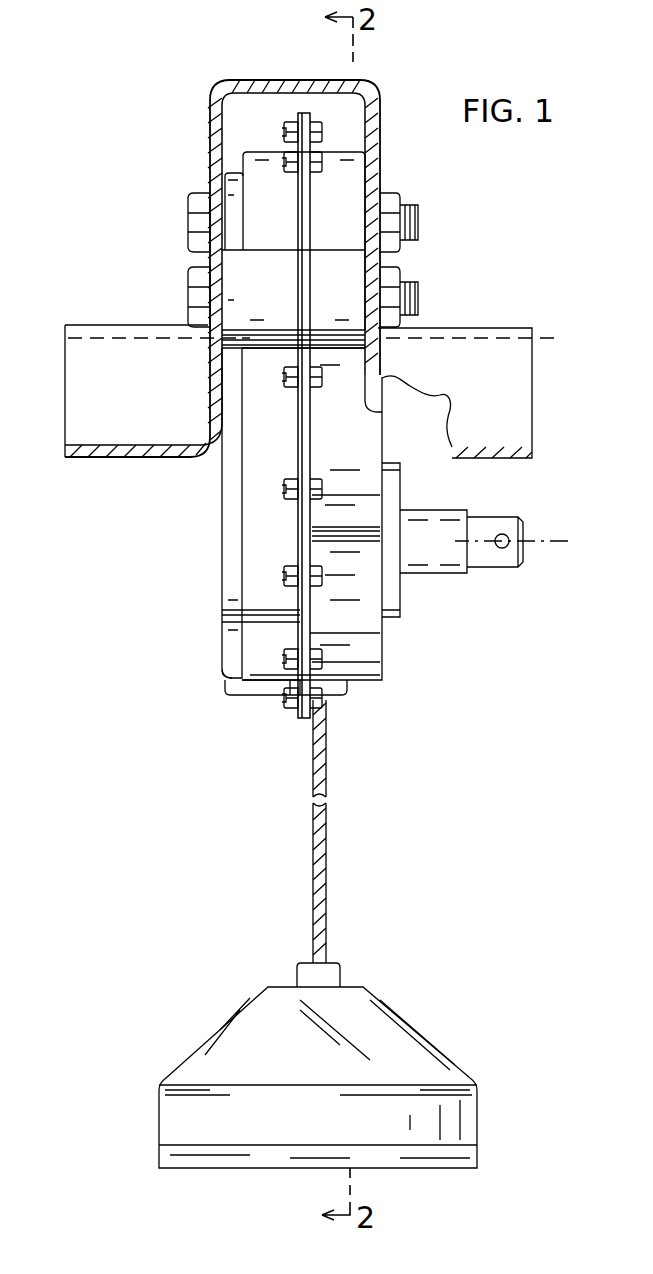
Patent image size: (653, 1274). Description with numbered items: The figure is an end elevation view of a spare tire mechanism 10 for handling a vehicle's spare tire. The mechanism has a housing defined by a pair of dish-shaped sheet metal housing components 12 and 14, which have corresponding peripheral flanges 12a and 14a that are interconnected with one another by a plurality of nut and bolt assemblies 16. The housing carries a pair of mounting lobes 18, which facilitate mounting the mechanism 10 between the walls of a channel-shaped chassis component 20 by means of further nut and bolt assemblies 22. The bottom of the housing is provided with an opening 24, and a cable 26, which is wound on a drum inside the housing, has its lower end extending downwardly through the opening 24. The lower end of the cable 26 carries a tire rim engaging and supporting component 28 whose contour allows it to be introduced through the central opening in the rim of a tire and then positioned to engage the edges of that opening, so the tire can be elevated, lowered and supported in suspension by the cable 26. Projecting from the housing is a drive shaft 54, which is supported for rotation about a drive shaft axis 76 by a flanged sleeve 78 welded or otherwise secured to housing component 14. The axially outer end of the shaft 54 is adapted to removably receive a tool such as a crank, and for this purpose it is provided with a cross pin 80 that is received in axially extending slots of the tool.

The spare tire mechanism 10 is at (195, 554).
The housing component 12 is at (232, 495).
The peripheral flange 12a is at (300, 720).
The housing component 14 is at (378, 656).
The peripheral flange 14a is at (310, 716).
The nut and bolt assemblies 16 is at (300, 117).
The mounting lobes 18 is at (235, 172).
The channel-shaped chassis component 20 is at (383, 81).
The nut and bolt assemblies 22 is at (195, 205).
The opening 24 is at (253, 688).
The cable 26 is at (326, 865).
The tire rim engaging and supporting component 28 is at (417, 1024).
The drive shaft 54 is at (498, 508).
The drive shaft axis 76 is at (556, 541).
The flanged sleeve 78 is at (443, 572).
The cross pin 80 is at (503, 548).